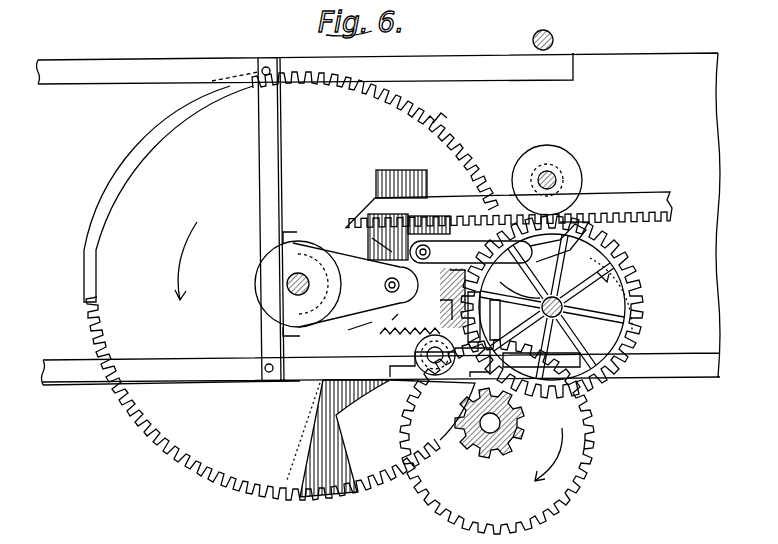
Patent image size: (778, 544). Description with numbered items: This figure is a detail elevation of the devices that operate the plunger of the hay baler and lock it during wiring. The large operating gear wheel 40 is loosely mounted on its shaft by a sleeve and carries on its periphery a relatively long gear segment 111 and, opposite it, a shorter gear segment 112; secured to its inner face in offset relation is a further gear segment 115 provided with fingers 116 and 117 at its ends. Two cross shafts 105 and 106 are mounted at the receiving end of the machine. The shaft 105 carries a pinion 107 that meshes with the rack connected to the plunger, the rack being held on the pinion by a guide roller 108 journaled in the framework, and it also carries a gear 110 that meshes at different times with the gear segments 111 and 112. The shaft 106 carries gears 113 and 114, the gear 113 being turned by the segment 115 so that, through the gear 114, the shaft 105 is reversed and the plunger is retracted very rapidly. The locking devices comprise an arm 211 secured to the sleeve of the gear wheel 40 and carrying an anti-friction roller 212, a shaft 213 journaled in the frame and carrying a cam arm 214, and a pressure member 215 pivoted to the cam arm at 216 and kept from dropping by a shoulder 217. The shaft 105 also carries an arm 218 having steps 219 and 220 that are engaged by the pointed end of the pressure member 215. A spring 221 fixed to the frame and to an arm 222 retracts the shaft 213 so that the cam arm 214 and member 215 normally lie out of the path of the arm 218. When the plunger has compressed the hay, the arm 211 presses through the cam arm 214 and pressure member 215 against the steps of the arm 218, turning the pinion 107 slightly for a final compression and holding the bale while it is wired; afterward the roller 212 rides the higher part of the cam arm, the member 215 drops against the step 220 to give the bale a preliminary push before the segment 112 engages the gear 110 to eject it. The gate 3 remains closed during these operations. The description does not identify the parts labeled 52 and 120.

The gate 3 is at (641, 194).
The operating gear wheel 40 is at (190, 238).
The cam disc 52 is at (255, 284).
The shaft 105 is at (659, 335).
The shaft 106 is at (490, 472).
The pinion 107 is at (640, 285).
The guide roller 108 is at (565, 157).
The gear 110 is at (620, 300).
The gear segment 111 is at (192, 470).
The gear segment 112 is at (447, 118).
The gear 113 is at (522, 413).
The gear 114 is at (484, 472).
The gear segment 115 is at (420, 437).
The finger 116 is at (336, 504).
The finger 117 is at (541, 360).
The arcuate guide 120 is at (112, 182).
The arm 211 is at (352, 328).
The anti-friction roller 212 is at (372, 238).
The shaft 213 is at (410, 386).
The cam arm 214 is at (452, 300).
The pressure member 215 is at (471, 252).
The pivot 216 is at (373, 208).
The shoulder 217 is at (329, 243).
The arm 218 is at (596, 262).
The step 219 is at (566, 220).
The step 220 is at (509, 210).
The spring 221 is at (397, 316).
The arm 222 is at (425, 385).